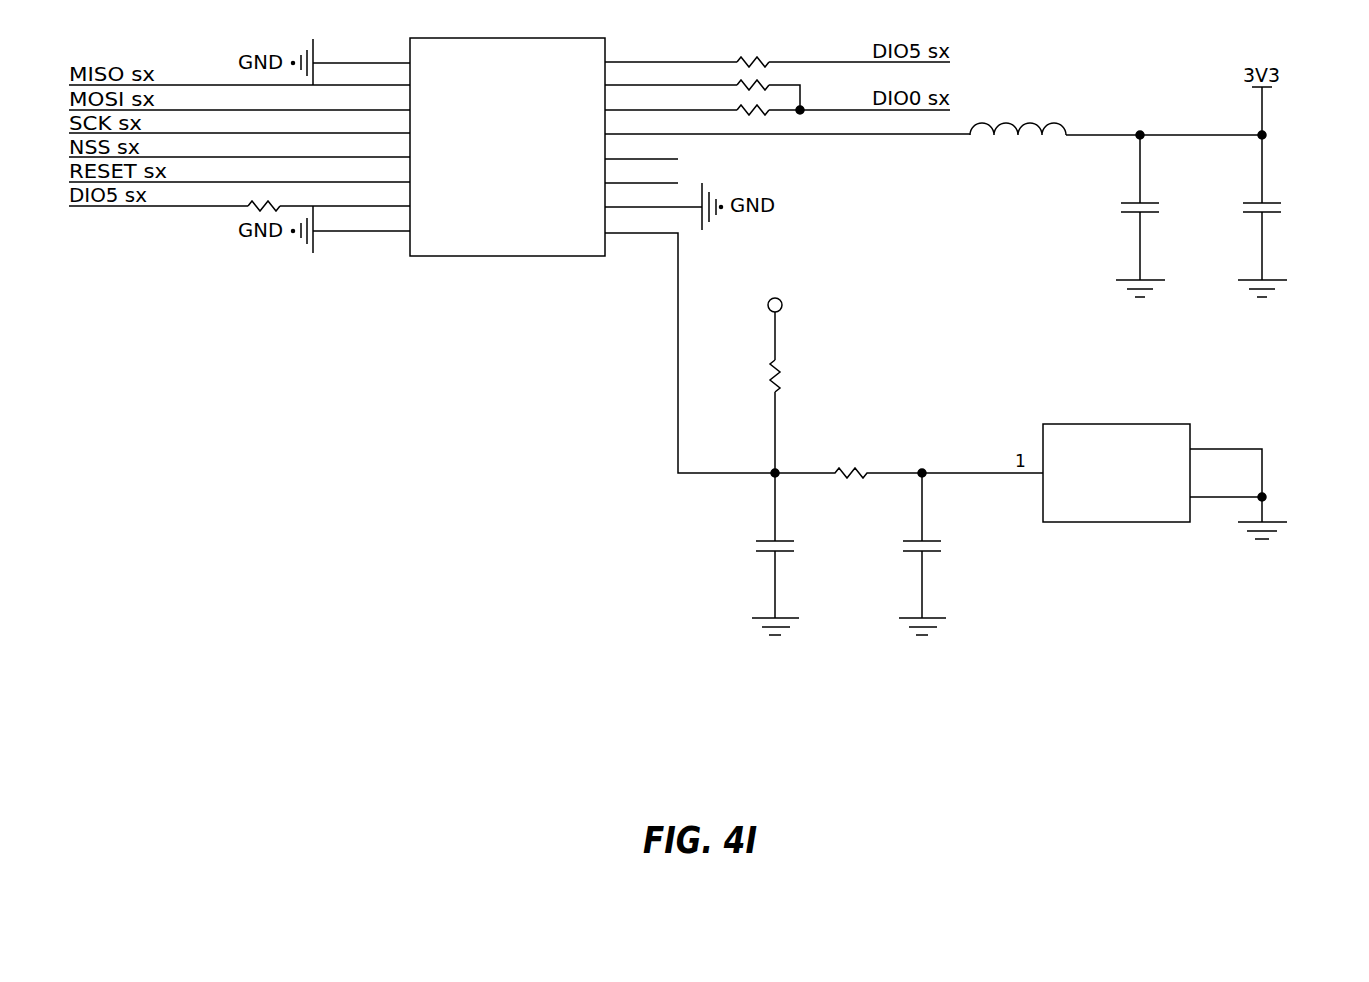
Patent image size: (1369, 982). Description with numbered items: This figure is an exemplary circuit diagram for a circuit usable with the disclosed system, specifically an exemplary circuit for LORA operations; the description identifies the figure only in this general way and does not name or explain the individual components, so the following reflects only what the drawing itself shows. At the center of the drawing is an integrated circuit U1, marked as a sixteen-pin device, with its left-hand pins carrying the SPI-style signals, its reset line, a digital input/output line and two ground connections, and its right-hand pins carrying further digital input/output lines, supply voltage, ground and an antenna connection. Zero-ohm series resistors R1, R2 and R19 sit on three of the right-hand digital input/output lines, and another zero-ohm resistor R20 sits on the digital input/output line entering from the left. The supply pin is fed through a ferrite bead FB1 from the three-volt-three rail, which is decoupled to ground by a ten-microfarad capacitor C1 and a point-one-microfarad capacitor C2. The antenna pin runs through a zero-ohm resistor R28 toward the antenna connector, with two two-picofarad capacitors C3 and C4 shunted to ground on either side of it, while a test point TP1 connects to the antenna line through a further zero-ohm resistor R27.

The LoRa transceiver IC 1276C1/1262 U1 is at (519, 243).
The 0 ohm resistor R1 is at (751, 53).
The 0 ohm resistor R2 is at (751, 76).
The 0 ohm resistor R19 is at (751, 101).
The 0 ohm resistor R20 is at (265, 197).
The 0 ohm resistor R27 is at (794, 413).
The 0 ohm resistor R28 is at (909, 463).
The 10uF capacitor C1 is at (1160, 231).
The 0.1uF capacitor C2 is at (1285, 231).
The 2pF capacitor C3 is at (793, 570).
The 2pF capacitor C4 is at (940, 570).
The ferrite bead FB1 is at (1018, 112).
The test point TP1 is at (789, 309).